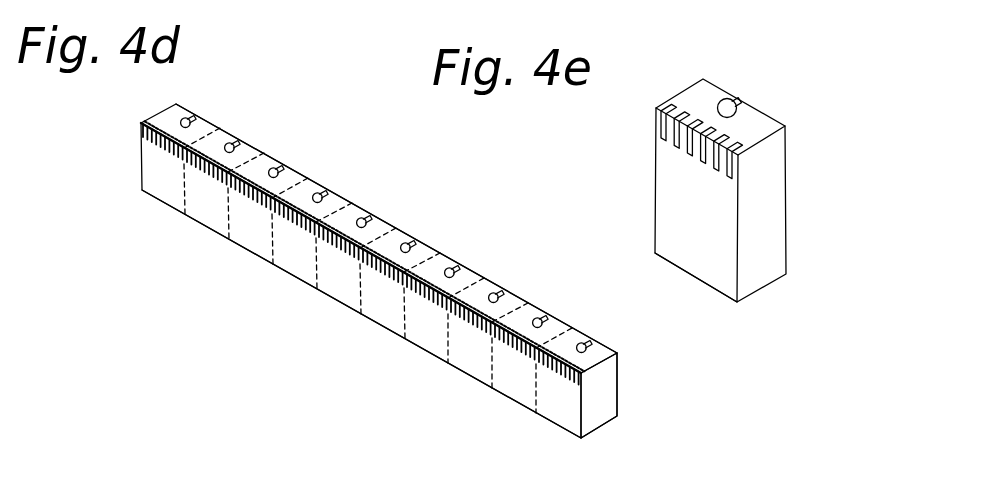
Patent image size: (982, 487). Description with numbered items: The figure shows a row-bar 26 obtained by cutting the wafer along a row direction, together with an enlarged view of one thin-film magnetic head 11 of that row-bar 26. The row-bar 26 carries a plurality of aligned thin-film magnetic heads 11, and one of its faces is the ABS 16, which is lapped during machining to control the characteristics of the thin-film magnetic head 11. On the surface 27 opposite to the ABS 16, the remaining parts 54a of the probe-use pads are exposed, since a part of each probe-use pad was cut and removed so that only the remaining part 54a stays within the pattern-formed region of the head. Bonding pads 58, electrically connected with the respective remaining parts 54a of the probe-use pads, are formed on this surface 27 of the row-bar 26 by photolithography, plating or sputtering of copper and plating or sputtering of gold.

In FIG. 4D, the thin-film magnetic head 11 is at (422, 253).
In FIG. 4E, the thin-film magnetic head 11 is at (799, 118).
In FIG. 4D, the ABS 16 is at (567, 322).
In FIG. 4D, the row-bar 26 is at (606, 386).
In FIG. 4D, the surface opposite to the ABS 27 is at (297, 256).
In FIG. 4E, the surface opposite to the ABS 27 is at (693, 268).
In FIG. 4E, the remaining part of probe-use pad 54a is at (685, 120).
In FIG. 4E, the bonding pad 58 is at (677, 142).